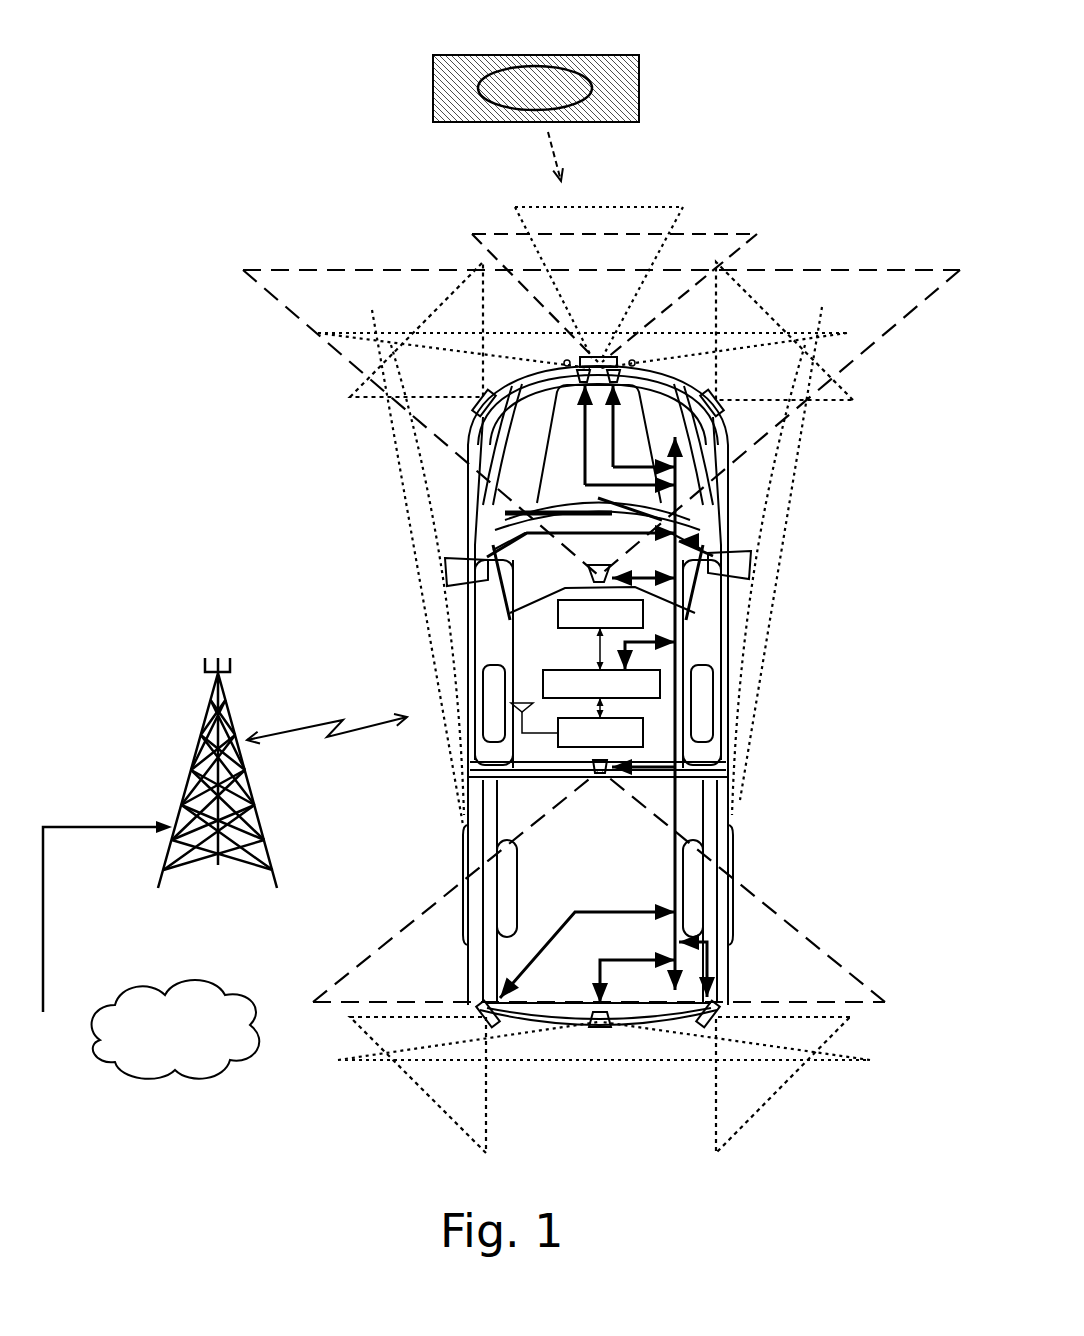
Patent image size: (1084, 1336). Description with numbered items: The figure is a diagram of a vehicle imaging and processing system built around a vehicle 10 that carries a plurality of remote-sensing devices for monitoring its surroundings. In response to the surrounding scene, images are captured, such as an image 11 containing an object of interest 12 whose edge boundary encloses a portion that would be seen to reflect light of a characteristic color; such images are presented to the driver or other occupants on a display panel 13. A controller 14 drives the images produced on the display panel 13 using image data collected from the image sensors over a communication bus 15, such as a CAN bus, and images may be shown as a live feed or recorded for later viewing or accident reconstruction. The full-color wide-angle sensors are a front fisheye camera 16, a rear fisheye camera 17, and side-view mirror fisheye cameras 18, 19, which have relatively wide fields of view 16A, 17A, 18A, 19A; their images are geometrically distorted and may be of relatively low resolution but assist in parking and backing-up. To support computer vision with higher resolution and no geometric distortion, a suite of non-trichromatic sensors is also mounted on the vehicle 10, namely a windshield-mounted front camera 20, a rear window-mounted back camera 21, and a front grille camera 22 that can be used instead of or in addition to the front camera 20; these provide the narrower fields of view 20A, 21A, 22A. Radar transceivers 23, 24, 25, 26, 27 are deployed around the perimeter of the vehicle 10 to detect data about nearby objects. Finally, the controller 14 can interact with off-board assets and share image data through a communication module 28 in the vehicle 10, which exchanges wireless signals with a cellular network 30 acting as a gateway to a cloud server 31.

The vehicle 10 is at (716, 745).
The image 11 is at (652, 85).
The object of interest 12 is at (478, 90).
The display panel 13 is at (558, 611).
The controller 14 is at (543, 681).
The communication bus 15 is at (668, 869).
The front fisheye camera 16 is at (576, 390).
The field of view of front fisheye camera 16A is at (460, 330).
The rear fisheye camera 17 is at (602, 1030).
The field of view of rear fisheye camera 17A is at (540, 1061).
The side-view mirror fisheye camera 18 is at (447, 566).
The field of view of side-view mirror fisheye camera 18A is at (396, 465).
The side-view mirror fisheye camera 19 is at (751, 556).
The field of view of side-view mirror fisheye camera 19A is at (767, 600).
The windshield-mounted front camera 20 is at (590, 575).
The field of view of front camera 20A is at (858, 270).
The rear window-mounted back camera 21 is at (595, 775).
The field of view of back camera 21A is at (846, 999).
The front grille camera 22 is at (640, 405).
The field of view of front grille camera 22A is at (707, 234).
The radar transceiver 23 is at (600, 355).
The radar transceiver 24 is at (479, 396).
The radar transceiver 25 is at (722, 410).
The radar transceiver 26 is at (482, 1010).
The radar transceiver 27 is at (707, 1030).
The communication module 28 is at (643, 723).
The cellular network 30 is at (173, 715).
The cloud server 31 is at (170, 1092).